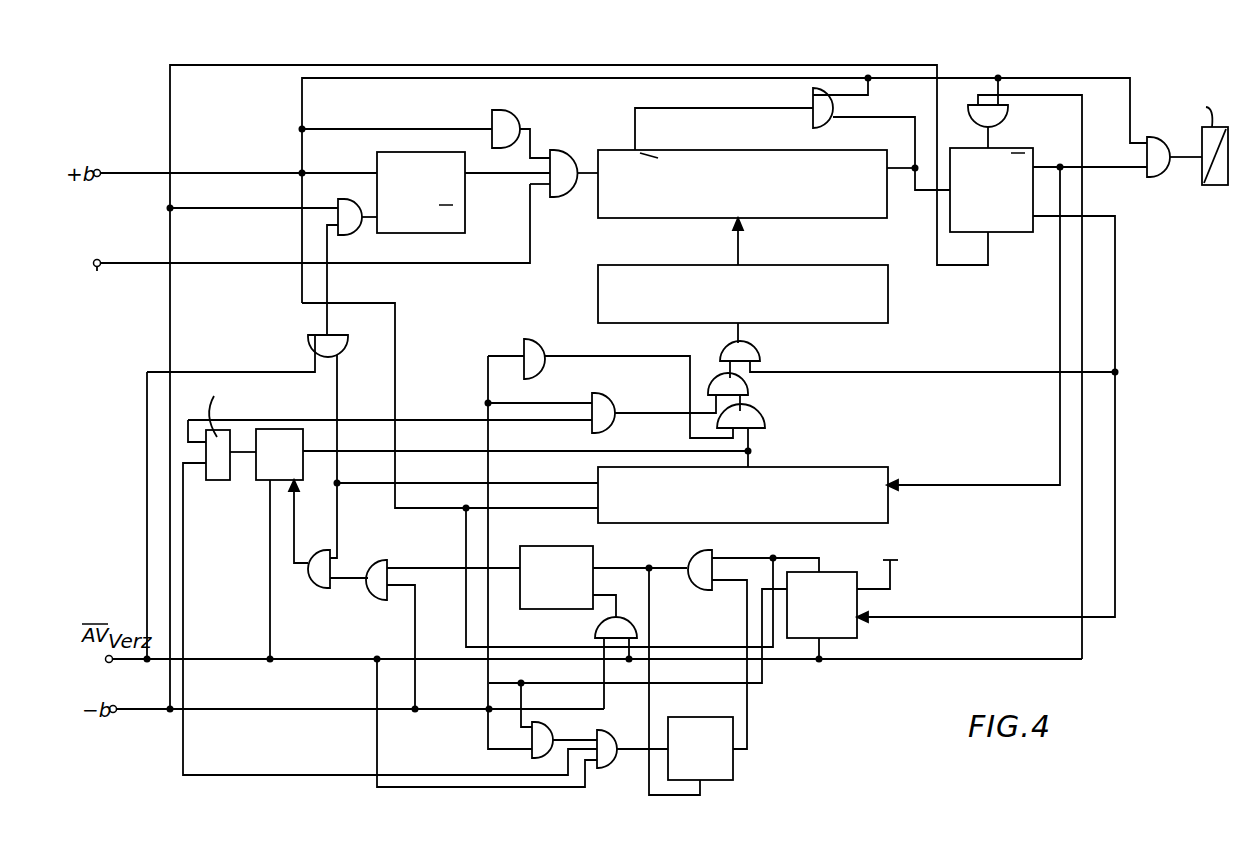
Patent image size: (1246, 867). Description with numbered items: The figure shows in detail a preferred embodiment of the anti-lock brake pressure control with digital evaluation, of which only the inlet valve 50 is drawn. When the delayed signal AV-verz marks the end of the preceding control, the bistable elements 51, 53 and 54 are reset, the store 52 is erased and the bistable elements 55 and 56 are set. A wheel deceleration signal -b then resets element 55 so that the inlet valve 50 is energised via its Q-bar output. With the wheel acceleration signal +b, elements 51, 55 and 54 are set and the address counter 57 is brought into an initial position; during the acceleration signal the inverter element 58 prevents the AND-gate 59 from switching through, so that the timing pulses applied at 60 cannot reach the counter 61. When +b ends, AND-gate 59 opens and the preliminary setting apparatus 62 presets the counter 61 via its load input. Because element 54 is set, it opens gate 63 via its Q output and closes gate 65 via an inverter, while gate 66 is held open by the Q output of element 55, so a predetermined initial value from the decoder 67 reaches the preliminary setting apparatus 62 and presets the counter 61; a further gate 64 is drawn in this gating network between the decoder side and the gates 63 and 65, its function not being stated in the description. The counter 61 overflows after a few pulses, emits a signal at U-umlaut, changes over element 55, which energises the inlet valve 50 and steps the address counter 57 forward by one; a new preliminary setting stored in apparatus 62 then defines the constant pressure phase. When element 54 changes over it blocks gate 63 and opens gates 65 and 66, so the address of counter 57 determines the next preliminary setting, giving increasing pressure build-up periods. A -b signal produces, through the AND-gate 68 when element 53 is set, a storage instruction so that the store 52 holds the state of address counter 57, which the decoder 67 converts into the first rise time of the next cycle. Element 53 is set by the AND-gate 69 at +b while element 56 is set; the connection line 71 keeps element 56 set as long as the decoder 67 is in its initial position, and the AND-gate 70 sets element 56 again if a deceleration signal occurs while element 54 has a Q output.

The inlet valve 50 is at (1210, 183).
The bistable element 51 is at (467, 220).
The store 52 is at (262, 485).
The bistable element 53 is at (547, 600).
The bistable element 54 is at (859, 630).
The bistable element 55 is at (1010, 235).
The bistable element 56 is at (735, 768).
The address counter 57 is at (867, 464).
The inverter element 58 is at (513, 111).
The AND-gate 59 is at (568, 150).
The timing pulse input 60 is at (308, 244).
The counter 61 is at (852, 208).
The preliminary setting apparatus 62 is at (888, 294).
The gate 63 is at (609, 396).
The AND gate 64 is at (534, 340).
The gate 65 is at (762, 418).
The gate 66 is at (757, 350).
The decoder 67 is at (214, 480).
The AND-gate 68 is at (373, 592).
The AND-gate 69 is at (690, 558).
The AND-gate 70 is at (550, 730).
The connection line 71 is at (181, 757).